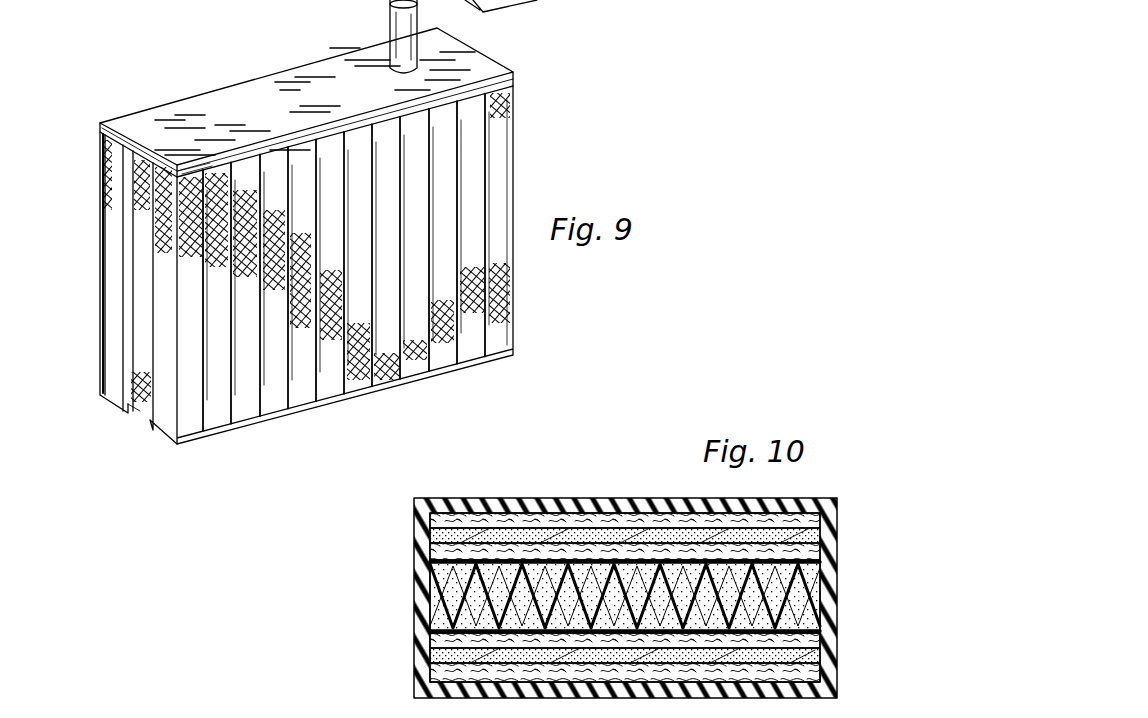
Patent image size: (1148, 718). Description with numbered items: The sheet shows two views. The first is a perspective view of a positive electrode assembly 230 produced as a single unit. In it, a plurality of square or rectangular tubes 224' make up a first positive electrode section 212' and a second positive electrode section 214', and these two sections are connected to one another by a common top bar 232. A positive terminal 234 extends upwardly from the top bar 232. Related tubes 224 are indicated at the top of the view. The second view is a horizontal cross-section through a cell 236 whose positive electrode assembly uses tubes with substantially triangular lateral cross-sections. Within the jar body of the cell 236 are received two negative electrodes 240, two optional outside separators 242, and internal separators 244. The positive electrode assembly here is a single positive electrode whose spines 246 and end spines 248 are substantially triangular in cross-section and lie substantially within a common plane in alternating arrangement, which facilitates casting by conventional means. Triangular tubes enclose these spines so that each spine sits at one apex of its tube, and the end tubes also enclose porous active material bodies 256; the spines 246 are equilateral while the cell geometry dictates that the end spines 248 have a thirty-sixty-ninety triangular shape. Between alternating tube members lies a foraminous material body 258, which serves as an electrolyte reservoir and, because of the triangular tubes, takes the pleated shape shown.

In FIG. 9, the positive electrode assembly 230 is at (335, 248).
In FIG. 9, the common top bar 232 is at (248, 92).
In FIG. 9, the positive terminal 234 is at (390, 24).
In FIG. 9, the frame member 224 is at (554, 16).
In FIG. 9, the square or rectangular tubes 224' is at (317, 295).
In FIG. 9, the first positive electrode section 212' is at (102, 288).
In FIG. 9, the second positive electrode section 214' is at (115, 435).
In FIG. 10, the cell 236 is at (624, 573).
In FIG. 10, the outside separators 242 is at (432, 515).
In FIG. 10, the negative electrodes 240 is at (432, 538).
In FIG. 10, the internal separators 244 is at (435, 556).
In FIG. 10, the end spines 248 is at (430, 603).
In FIG. 10, the porous active material bodies 256 is at (432, 628).
In FIG. 10, the spines 246 is at (825, 608).
In FIG. 10, the foraminous material body 258 is at (822, 536).